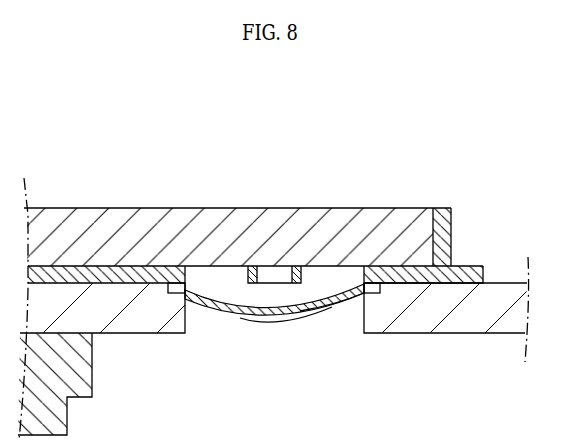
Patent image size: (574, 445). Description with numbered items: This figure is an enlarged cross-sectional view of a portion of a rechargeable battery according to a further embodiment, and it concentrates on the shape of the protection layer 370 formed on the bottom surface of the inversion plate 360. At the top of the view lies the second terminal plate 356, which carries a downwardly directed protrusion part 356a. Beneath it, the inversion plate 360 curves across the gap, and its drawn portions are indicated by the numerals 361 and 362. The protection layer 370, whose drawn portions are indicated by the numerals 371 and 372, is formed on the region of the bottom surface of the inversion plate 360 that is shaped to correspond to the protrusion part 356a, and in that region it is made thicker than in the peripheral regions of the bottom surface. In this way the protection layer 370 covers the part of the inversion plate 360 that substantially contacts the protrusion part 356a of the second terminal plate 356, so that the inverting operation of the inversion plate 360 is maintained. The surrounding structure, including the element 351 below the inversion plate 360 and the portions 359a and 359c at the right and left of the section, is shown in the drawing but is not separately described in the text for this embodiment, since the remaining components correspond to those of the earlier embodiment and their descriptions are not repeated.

The substrate 351 is at (457, 325).
The second terminal plate 356 is at (212, 207).
The protrusion part 356a is at (275, 277).
The side wall 359a is at (443, 213).
The lower step portion 359c is at (85, 378).
The inversion plate 360 is at (285, 350).
The first fixing member 361 is at (323, 303).
The second fixing member 362 is at (372, 290).
The protection layer 370 is at (271, 349).
The first diaphragm layer 371 is at (240, 318).
The second diaphragm layer 372 is at (290, 317).